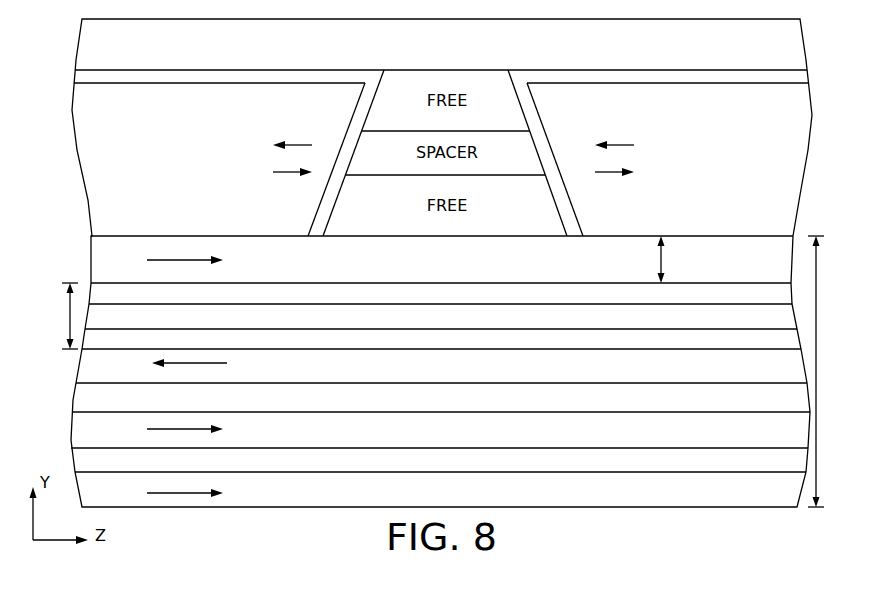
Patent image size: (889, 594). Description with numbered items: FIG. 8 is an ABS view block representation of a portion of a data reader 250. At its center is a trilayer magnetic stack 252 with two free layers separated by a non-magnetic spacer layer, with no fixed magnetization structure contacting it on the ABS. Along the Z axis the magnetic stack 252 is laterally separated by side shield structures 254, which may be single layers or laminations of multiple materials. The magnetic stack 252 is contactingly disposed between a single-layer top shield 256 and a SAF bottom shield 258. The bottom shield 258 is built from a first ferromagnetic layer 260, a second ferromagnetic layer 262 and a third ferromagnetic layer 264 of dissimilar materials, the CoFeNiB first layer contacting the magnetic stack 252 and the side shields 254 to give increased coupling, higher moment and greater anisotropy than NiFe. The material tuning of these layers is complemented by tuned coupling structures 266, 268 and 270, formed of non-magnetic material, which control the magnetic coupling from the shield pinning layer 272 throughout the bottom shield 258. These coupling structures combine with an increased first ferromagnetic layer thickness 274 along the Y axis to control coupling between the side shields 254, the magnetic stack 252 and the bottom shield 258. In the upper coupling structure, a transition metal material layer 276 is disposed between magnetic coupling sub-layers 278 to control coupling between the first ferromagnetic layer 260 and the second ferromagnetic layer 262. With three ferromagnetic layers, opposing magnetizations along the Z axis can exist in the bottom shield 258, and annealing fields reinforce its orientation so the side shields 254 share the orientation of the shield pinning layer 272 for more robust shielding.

The data reader 250 is at (774, 15).
The trilayer magnetic stack 252 is at (522, 108).
The side shield structure 254 is at (201, 104).
The top shield 256 is at (755, 55).
The SAF bottom shield 258 is at (827, 371).
The first ferromagnetic layer 260 is at (755, 271).
The second ferromagnetic layer 262 is at (755, 375).
The third ferromagnetic layer 264 is at (755, 437).
The tuned coupling structure 266 is at (57, 316).
The tuned coupling structure 268 is at (755, 405).
The tuned coupling structure 270 is at (755, 470).
The shield pinning layer 272 is at (755, 499).
The first ferromagnetic layer thickness 274 is at (646, 259).
The transition metal material layer 276 is at (755, 326).
The magnetic coupling sub-layer 278 is at (755, 303).